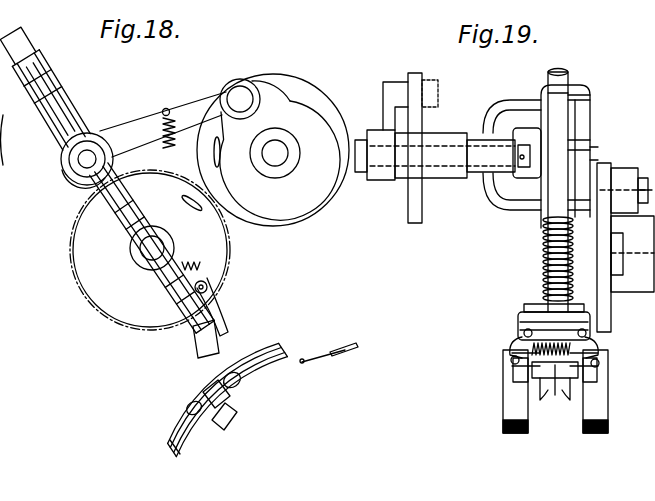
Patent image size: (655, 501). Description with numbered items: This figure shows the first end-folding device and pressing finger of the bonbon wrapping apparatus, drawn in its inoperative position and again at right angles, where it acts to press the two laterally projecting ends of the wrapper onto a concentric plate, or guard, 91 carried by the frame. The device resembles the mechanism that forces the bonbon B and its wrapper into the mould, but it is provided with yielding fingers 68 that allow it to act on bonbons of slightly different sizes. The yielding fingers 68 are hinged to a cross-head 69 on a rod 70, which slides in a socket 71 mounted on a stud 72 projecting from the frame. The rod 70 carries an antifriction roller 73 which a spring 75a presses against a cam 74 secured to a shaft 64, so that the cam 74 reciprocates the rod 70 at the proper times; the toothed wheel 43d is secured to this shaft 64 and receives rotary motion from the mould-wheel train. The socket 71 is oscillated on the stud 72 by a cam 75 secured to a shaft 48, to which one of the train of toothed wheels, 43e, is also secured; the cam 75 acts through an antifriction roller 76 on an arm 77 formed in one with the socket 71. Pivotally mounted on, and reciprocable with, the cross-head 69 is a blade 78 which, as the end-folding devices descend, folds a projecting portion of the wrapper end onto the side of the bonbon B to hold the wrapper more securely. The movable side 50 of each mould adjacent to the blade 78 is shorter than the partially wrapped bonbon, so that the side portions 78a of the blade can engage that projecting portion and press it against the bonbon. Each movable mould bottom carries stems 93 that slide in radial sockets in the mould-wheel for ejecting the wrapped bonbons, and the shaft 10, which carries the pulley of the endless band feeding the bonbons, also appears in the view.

In FIG. 18, the shaft 10 is at (30, 62).
In FIG. 18, the socket 71 is at (63, 98).
In FIG. 19, the socket 71 is at (604, 116).
In FIG. 18, the stud 72 is at (66, 151).
In FIG. 19, the stud 72 is at (479, 160).
In FIG. 18, the antifriction roller 73 is at (76, 179).
In FIG. 19, the antifriction roller 73 is at (611, 166).
In FIG. 18, the arm 77 is at (133, 126).
In FIG. 19, the arm 77 is at (392, 112).
In FIG. 18, the antifriction roller 76 is at (233, 81).
In FIG. 19, the antifriction roller 76 is at (420, 80).
In FIG. 18, the toothed wheel 43e is at (332, 205).
In FIG. 18, the cam 75 is at (277, 150).
In FIG. 19, the cam 75 is at (418, 209).
In FIG. 18, the shaft 48 is at (275, 153).
In FIG. 18, the toothed wheel 43d is at (230, 241).
In FIG. 18, the cam 74 is at (150, 250).
In FIG. 19, the cam 74 is at (611, 313).
In FIG. 18, the shaft 64 is at (150, 248).
In FIG. 19, the shaft 64 is at (637, 260).
In FIG. 18, the cross-head 69 is at (172, 290).
In FIG. 19, the cross-head 69 is at (578, 340).
In FIG. 18, the blade 78 is at (214, 324).
In FIG. 19, the blade 78 is at (512, 344).
In FIG. 18, the yielding fingers 68 is at (206, 350).
In FIG. 19, the yielding fingers 68 is at (513, 370).
In FIG. 18, the concentric plate or guard 91 is at (262, 378).
In FIG. 19, the concentric plate or guard 91 is at (503, 405).
In FIG. 18, the movable side 50 is at (217, 386).
In FIG. 19, the movable side 50 is at (556, 396).
In FIG. 18, the bonbon B is at (198, 397).
In FIG. 18, the stems 93 is at (224, 431).
In FIG. 19, the rod 70 is at (561, 73).
In FIG. 19, the spring 75a is at (546, 260).
In FIG. 19, the side portions 78a is at (629, 363).